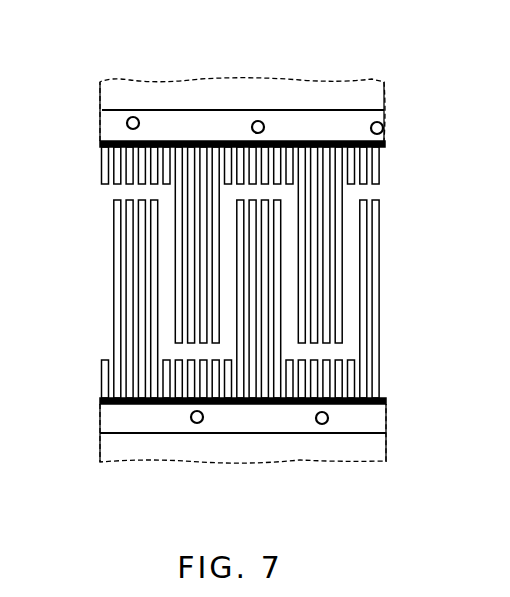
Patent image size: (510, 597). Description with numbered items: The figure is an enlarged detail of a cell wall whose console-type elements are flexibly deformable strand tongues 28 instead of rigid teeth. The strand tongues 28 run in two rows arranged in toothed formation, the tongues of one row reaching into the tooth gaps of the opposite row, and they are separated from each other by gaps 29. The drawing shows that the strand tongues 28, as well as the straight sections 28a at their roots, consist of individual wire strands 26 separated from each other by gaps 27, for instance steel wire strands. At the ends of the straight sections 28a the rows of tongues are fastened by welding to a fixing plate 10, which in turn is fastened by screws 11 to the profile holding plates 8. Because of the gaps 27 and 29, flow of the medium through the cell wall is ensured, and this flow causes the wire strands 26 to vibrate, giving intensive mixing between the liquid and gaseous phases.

The profile holding plate 8 is at (191, 93).
The fixing plate 10 is at (118, 127).
The screw 11 is at (130, 116).
The wire strand 26 is at (131, 232).
The gap 27 is at (187, 285).
The strand tongue 28 is at (283, 300).
The straight section 28a is at (296, 396).
The gap 29 is at (167, 217).